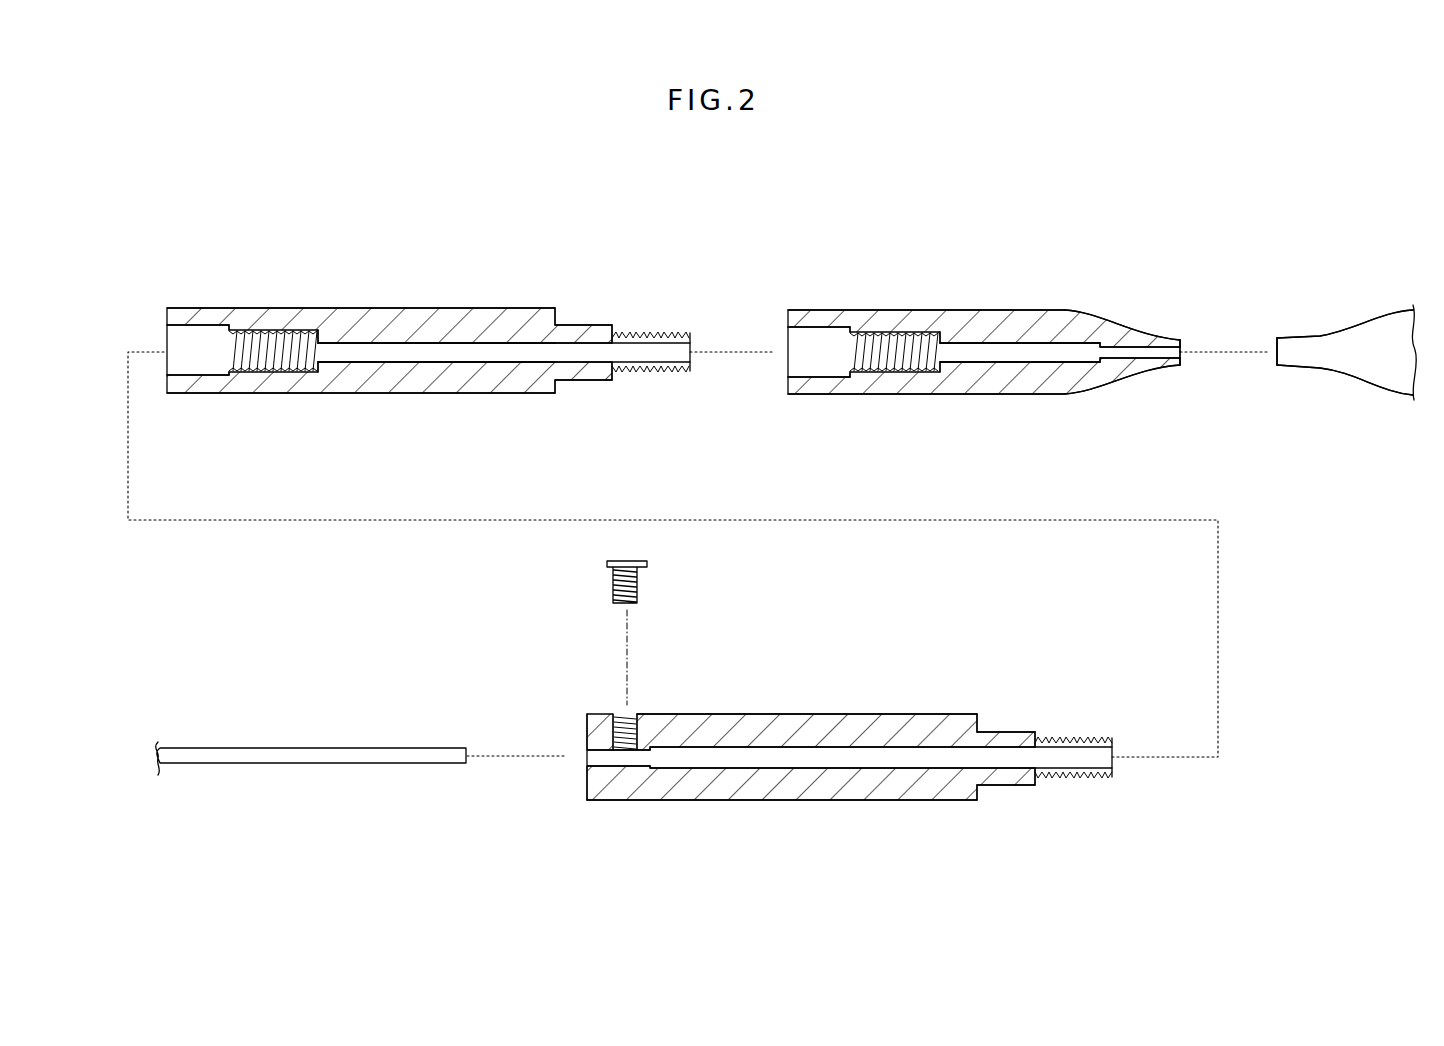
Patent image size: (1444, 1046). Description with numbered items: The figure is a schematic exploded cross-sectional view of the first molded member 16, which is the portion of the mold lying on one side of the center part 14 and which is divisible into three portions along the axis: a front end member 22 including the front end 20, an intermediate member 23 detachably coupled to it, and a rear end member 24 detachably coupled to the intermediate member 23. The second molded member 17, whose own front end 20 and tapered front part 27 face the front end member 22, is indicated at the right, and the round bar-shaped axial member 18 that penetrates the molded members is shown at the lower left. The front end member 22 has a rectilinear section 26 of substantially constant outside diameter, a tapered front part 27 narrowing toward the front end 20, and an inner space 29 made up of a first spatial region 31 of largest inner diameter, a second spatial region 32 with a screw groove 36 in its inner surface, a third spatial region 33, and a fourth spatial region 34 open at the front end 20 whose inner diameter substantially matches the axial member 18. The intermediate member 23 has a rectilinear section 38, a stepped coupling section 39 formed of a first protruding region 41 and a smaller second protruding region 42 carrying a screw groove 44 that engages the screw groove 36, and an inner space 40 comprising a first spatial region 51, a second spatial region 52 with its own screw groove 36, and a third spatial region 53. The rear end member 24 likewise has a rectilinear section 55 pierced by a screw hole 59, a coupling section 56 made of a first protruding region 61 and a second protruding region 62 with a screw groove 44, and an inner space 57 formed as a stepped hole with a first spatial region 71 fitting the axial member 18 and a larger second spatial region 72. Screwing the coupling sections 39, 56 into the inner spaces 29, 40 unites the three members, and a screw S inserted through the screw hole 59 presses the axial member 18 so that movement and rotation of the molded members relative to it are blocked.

The center part 14 is at (1162, 345).
The first molded member 16 is at (742, 225).
The second molded member 17 is at (1360, 268).
The axial member 18 is at (300, 750).
The front end 20 is at (1184, 366).
The front end member 22 is at (938, 255).
The intermediate member 23 is at (380, 262).
The rear end member 24 is at (800, 668).
The rectilinear section 26 is at (986, 310).
The tapered front part 27 is at (1110, 325).
The inner space 29 is at (797, 343).
The first spatial region 31 is at (830, 378).
The second spatial region 32 is at (876, 375).
The third spatial region 33 is at (1046, 325).
The fourth spatial region 34 is at (1136, 375).
The screw groove 36 is at (262, 322).
The rectilinear section 38 is at (450, 310).
The coupling section 39 is at (611, 323).
The inner space 40 is at (168, 340).
The first protruding region 41 is at (593, 380).
The second protruding region 42 is at (655, 374).
The screw groove 44 is at (652, 332).
The first spatial region 51 is at (206, 376).
The second spatial region 52 is at (292, 372).
The third spatial region 53 is at (575, 347).
The rectilinear section 55 is at (898, 714).
The coupling section 56 is at (1036, 733).
The inner space 57 is at (722, 766).
The screw hole 59 is at (633, 712).
The first protruding region 61 is at (1012, 786).
The second protruding region 62 is at (1074, 779).
The first spatial region 71 is at (628, 768).
The second spatial region 72 is at (926, 772).
The screw S is at (646, 580).